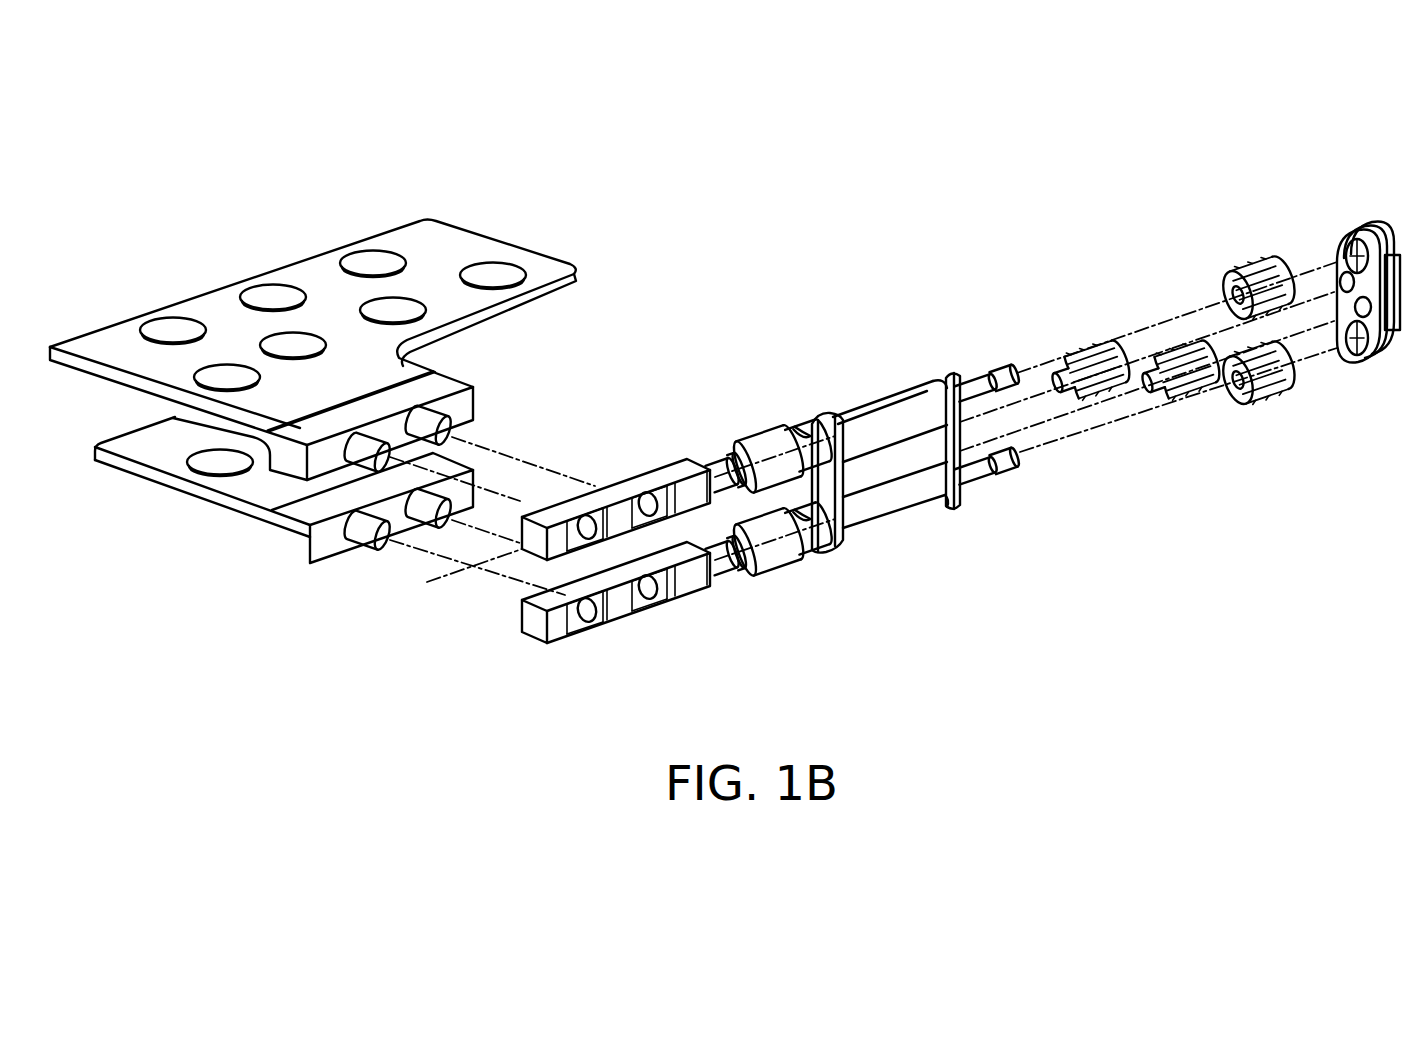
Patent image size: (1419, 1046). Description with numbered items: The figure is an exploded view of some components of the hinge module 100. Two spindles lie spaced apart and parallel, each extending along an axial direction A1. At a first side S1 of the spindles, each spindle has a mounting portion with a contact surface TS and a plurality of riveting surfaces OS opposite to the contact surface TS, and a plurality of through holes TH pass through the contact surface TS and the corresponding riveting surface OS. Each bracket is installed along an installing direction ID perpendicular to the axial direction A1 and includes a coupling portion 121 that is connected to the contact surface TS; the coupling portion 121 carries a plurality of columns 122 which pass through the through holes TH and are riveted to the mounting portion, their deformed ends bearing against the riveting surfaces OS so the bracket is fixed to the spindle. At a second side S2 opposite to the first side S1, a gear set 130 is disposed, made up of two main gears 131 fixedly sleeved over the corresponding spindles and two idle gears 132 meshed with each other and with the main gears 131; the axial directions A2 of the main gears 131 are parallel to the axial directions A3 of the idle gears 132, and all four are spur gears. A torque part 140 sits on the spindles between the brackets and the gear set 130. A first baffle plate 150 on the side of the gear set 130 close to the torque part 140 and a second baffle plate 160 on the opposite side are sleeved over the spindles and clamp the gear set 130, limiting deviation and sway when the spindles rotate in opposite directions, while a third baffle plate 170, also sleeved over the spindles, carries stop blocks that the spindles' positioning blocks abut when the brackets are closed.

The hinge module 100 is at (1415, 698).
The coupling portion 121 is at (283, 448).
The columns 122 is at (358, 448).
The gear set 130 is at (1298, 175).
The main gears 131 is at (1293, 343).
The idle gears 132 is at (1180, 353).
The torque part 140 is at (877, 425).
The first baffle plate 150 is at (957, 470).
The second baffle plate 160 is at (1376, 318).
The third baffle plate 170 is at (830, 517).
The axial direction A1 is at (458, 580).
The axial directions of the main gears A2 is at (1315, 258).
The axial directions of the idle gears A3 is at (1325, 356).
The first side S1 is at (560, 655).
The second side S2 is at (1003, 352).
The through holes TH is at (650, 514).
The riveting surfaces OS is at (667, 514).
The contact surface TS is at (645, 468).
The installing direction ID is at (497, 497).